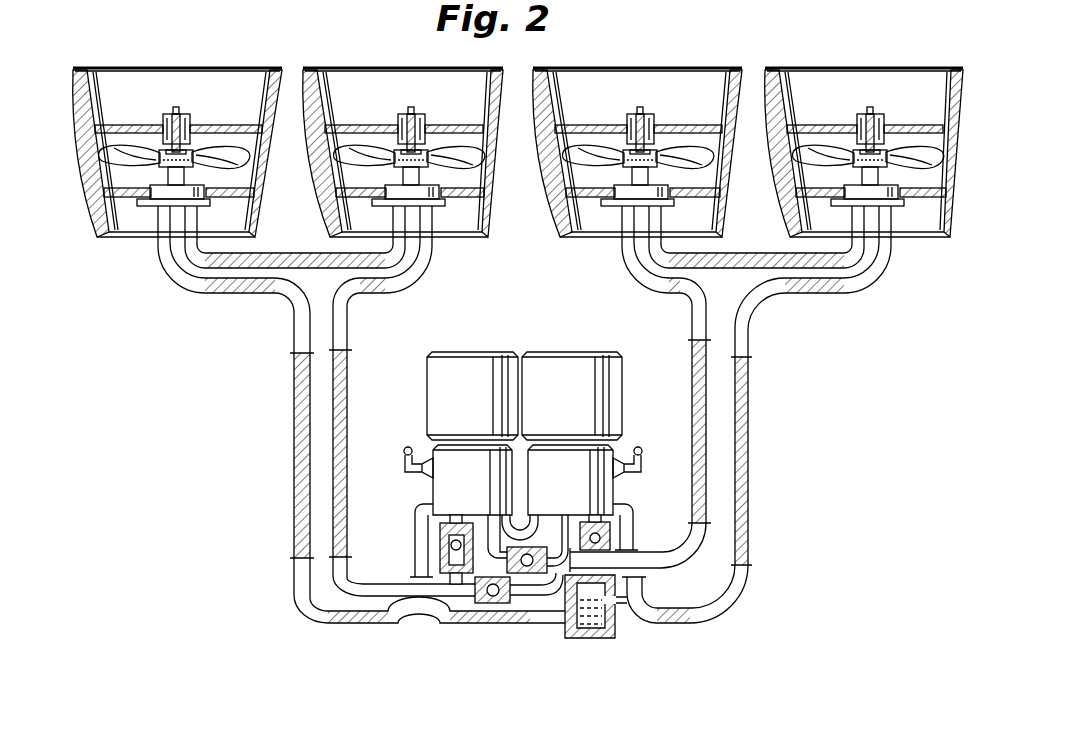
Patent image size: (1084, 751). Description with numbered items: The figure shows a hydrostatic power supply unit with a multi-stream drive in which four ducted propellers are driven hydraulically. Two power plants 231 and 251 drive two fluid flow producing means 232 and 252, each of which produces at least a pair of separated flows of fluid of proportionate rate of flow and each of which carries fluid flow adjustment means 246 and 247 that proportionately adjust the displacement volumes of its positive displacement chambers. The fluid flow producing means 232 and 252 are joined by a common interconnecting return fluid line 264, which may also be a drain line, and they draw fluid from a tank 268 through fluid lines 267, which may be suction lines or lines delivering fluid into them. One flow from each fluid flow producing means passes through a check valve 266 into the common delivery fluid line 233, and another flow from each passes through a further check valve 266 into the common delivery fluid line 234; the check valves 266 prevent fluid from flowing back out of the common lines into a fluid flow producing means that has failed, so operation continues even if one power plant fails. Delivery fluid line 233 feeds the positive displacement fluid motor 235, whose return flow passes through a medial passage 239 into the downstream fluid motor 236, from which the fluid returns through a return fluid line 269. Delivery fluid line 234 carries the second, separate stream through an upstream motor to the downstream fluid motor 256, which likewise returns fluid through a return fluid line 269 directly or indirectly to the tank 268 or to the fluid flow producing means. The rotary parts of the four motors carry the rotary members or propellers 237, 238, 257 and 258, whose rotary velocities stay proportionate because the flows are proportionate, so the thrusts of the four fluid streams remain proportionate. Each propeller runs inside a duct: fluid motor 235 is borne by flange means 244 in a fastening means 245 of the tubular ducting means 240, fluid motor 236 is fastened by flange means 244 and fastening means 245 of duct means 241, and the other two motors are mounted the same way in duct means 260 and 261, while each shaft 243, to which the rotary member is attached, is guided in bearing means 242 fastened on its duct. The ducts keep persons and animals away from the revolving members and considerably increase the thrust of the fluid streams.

The power plant 231 is at (468, 368).
The fluid flow producing means 232 is at (453, 458).
The delivery fluid line 233 is at (348, 393).
The delivery fluid line 234 is at (692, 378).
The positive displacement fluid motor 235 is at (424, 240).
The downstream fluid motor 236 is at (172, 250).
The rotary member 237 is at (452, 152).
The rotary member 238 is at (232, 152).
The medial passage 239 is at (294, 253).
The tubular ducting means 240 is at (310, 85).
The duct means 241 is at (268, 180).
The bearing means 242 is at (163, 118).
The shaft 243 is at (177, 107).
The flange means 244 is at (165, 195).
The fastening means 245 is at (238, 197).
The fluid flow adjustment means 246 is at (408, 449).
The fluid flow adjustment means 247 is at (642, 449).
The power plant 251 is at (562, 368).
The fluid flow producing means 252 is at (558, 458).
The downstream fluid motor 256 is at (882, 242).
The rotary member 257 is at (592, 152).
The rotary member 258 is at (920, 152).
The duct means 260 is at (733, 135).
The duct means 261 is at (780, 185).
The interconnecting return fluid line 264 is at (528, 528).
The check valve 266 is at (440, 552).
The fluid line 267 is at (638, 600).
The tank 268 is at (598, 630).
The return fluid line 269 is at (294, 395).